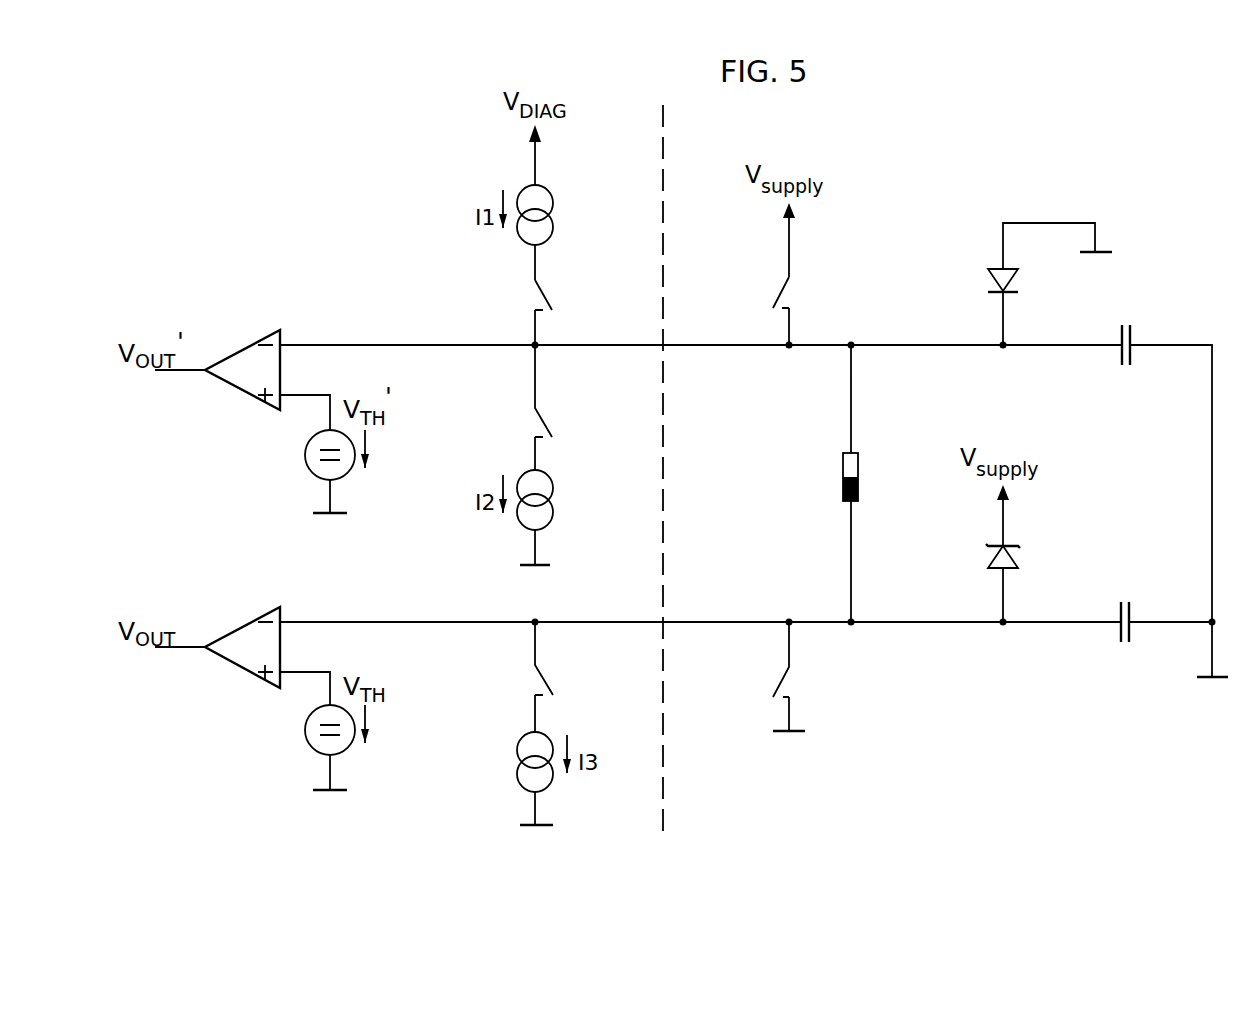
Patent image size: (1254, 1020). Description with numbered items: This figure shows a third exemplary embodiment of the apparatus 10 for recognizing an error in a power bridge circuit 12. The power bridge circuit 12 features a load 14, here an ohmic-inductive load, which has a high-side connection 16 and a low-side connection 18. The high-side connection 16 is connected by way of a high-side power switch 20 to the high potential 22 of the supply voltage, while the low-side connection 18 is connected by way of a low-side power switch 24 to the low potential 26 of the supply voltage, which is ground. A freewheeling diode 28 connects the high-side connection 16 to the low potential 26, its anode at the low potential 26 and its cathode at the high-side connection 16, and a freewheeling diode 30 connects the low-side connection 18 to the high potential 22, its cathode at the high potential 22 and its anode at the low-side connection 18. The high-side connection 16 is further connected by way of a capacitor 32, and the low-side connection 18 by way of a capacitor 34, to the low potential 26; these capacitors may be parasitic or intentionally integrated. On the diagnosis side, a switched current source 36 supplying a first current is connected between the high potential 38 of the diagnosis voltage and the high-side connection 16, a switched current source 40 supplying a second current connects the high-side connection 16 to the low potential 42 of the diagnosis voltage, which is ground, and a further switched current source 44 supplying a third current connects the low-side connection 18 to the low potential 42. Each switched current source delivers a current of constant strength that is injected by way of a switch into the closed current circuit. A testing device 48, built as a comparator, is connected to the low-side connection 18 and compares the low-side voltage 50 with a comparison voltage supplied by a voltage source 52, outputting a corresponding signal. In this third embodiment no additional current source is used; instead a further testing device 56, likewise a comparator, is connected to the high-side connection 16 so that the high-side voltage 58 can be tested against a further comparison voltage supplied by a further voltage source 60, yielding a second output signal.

The apparatus 10 is at (222, 186).
The power bridge circuit 12 is at (937, 154).
The load 14 is at (843, 468).
The high-side connection 16 is at (855, 348).
The low-side connection 18 is at (855, 618).
The high-side power switch 20 is at (778, 290).
The high potential of the supply voltage 22 is at (782, 206).
The low-side power switch 24 is at (778, 682).
The low potential of the supply voltage 26 is at (1100, 250).
The freewheeling diode 28 is at (990, 280).
The freewheeling diode 30 is at (990, 557).
The capacitor 32 is at (1135, 330).
The capacitor 34 is at (1135, 612).
The switched current source 36 is at (490, 266).
The high potential of the diagnosis voltage 38 is at (528, 132).
The switched current source 40 is at (510, 445).
The low potential of the diagnosis voltage 42 is at (320, 517).
The switched current source 44 is at (496, 700).
The testing device 48 is at (238, 668).
The low-side voltage 50 is at (828, 605).
The voltage source 52 is at (305, 730).
The further testing device 56 is at (238, 393).
The high-side voltage 58 is at (812, 372).
The further voltage source 60 is at (305, 455).